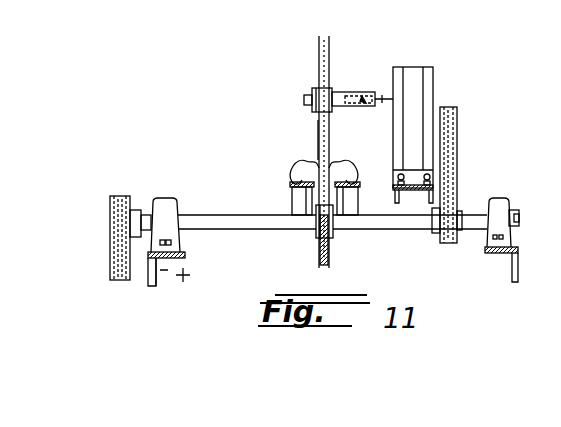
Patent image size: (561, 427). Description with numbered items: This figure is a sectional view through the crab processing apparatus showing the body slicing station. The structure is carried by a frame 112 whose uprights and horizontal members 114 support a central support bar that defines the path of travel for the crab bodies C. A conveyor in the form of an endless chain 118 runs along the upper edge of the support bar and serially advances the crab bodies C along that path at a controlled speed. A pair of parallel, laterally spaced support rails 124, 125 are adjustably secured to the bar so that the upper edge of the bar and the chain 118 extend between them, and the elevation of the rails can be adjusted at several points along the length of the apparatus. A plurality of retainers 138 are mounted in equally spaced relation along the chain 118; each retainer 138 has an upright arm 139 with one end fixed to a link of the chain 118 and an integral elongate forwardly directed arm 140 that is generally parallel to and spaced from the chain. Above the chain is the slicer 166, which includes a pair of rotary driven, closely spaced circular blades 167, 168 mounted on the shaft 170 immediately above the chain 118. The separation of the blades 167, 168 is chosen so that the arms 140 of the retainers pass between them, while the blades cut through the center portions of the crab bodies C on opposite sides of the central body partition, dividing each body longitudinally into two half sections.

The frame 112 is at (140, 285).
The horizontal members 114 is at (508, 268).
The chain 118 is at (300, 198).
The support rail 124 is at (290, 180).
The support rail 125 is at (356, 186).
The retainer 138 is at (318, 137).
The upright arm 139 is at (348, 157).
The forwardly directed arm 140 is at (361, 134).
The slicer 166 is at (310, 144).
The circular blade 167 is at (319, 42).
The circular blade 168 is at (350, 144).
The shaft 170 is at (380, 92).
The crab bodies C is at (302, 161).